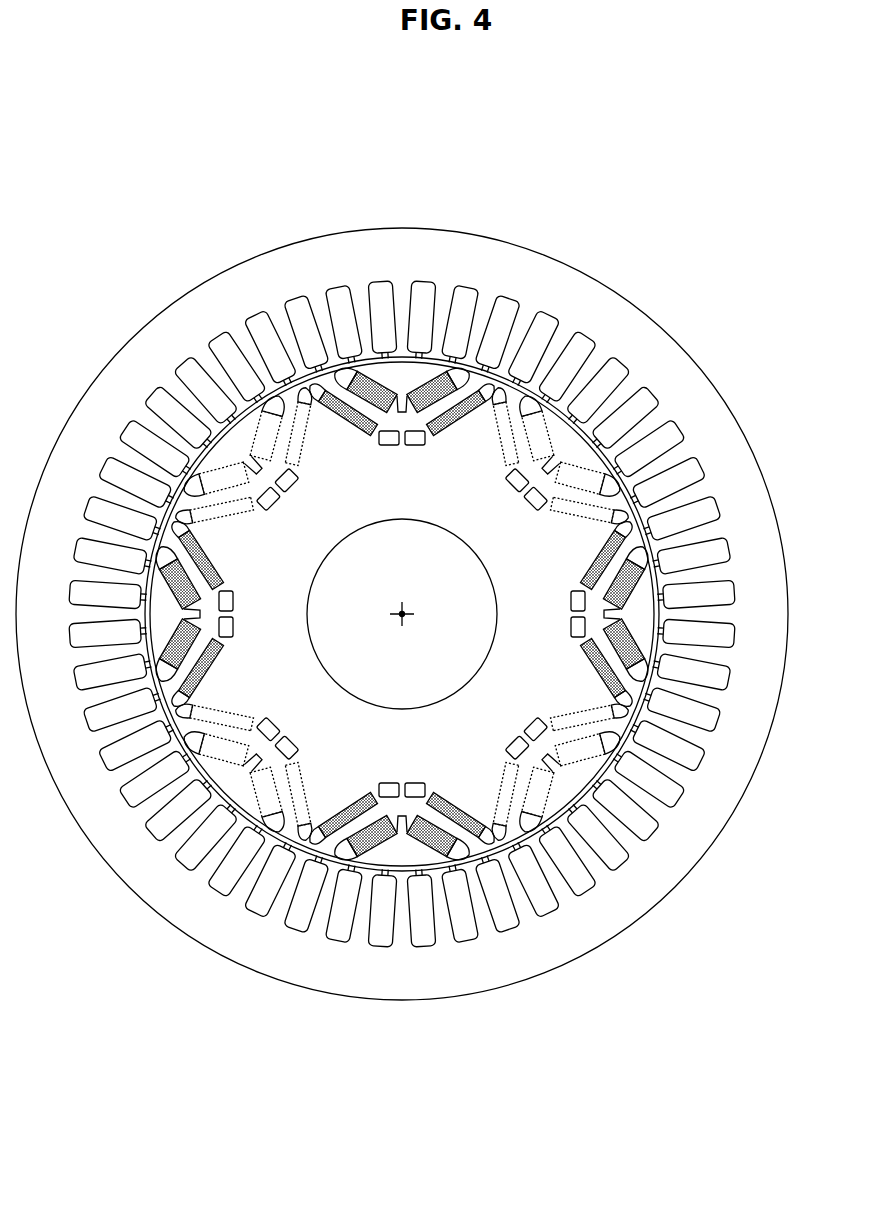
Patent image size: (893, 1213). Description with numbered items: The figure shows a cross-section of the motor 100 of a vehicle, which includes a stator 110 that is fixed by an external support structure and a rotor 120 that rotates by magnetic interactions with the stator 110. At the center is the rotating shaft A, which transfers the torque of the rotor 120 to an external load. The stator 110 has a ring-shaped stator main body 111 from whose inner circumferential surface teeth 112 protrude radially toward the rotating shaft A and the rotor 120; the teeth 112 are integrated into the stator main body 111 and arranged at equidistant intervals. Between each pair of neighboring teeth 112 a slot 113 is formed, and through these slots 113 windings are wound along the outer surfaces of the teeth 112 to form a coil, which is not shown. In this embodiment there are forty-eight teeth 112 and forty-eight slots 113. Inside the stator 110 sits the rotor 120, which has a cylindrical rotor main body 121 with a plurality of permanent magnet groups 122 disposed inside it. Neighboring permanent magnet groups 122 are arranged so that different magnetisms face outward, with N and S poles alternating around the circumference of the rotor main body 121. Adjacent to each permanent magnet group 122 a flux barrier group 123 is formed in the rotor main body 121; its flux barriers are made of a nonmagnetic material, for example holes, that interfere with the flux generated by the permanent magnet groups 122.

The motor 100 is at (103, 181).
The stator 110 is at (490, 173).
The stator main body 111 is at (385, 238).
The teeth 112 is at (447, 298).
The slots 113 is at (468, 297).
The rotor 120 is at (327, 1050).
The rotor main body 121 is at (332, 782).
The permanent magnet groups 122 is at (285, 822).
The flux barrier group 123 is at (198, 740).
The rotating shaft A is at (408, 616).